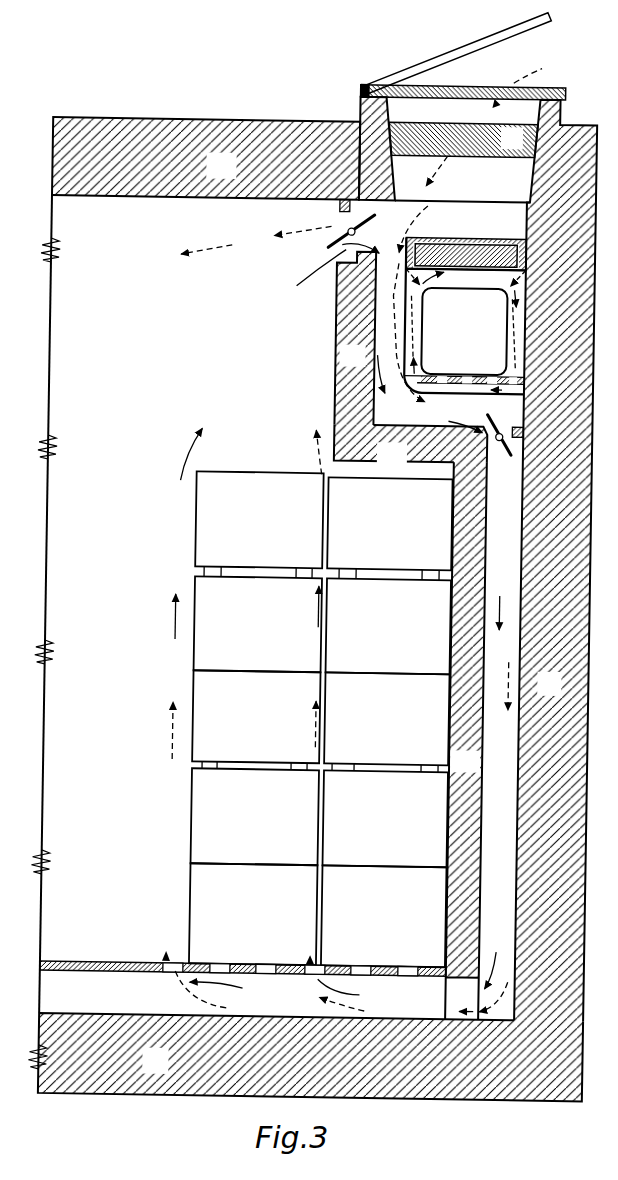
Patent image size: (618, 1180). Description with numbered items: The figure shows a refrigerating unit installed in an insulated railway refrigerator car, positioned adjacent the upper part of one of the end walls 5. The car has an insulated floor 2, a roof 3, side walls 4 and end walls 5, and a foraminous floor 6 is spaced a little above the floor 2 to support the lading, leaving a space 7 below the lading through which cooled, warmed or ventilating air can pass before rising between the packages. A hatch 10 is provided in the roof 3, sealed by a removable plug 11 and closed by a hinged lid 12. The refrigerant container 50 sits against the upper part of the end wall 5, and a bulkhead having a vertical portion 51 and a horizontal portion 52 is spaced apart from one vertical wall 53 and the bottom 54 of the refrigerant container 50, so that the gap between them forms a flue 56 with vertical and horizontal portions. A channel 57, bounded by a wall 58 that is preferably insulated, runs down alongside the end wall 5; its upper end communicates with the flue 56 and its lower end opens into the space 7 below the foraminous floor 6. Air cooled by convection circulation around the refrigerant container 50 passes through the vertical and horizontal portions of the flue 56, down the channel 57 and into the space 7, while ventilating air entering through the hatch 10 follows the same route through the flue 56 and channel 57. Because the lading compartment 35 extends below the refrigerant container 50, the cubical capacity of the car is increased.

The floor 2 is at (310, 1057).
The roof 3 is at (206, 158).
The side wall 4 is at (52, 308).
The end wall 5 is at (555, 560).
The foraminous floor 6 is at (123, 961).
The space 7 is at (242, 994).
The hatch 10 is at (478, 135).
The removable plug 11 is at (463, 139).
The hinged lid 12 is at (455, 50).
The treatment chamber 35 is at (278, 595).
The refrigerant container 50 is at (464, 331).
The vertical portion of the bulkhead 51 is at (355, 338).
The horizontal portion of the bulkhead 52 is at (411, 445).
The vertical wall of the refrigerant container 53 is at (408, 336).
The bottom of the refrigerant container 54 is at (446, 411).
The flue 56 is at (404, 345).
The channel 57 is at (491, 742).
The wall 58 is at (466, 740).